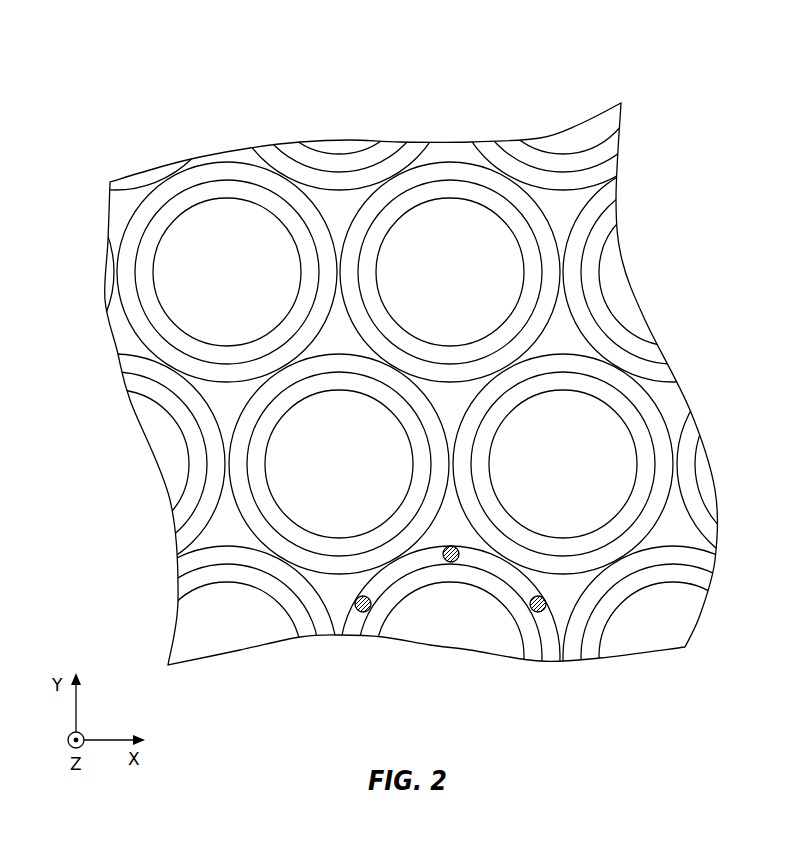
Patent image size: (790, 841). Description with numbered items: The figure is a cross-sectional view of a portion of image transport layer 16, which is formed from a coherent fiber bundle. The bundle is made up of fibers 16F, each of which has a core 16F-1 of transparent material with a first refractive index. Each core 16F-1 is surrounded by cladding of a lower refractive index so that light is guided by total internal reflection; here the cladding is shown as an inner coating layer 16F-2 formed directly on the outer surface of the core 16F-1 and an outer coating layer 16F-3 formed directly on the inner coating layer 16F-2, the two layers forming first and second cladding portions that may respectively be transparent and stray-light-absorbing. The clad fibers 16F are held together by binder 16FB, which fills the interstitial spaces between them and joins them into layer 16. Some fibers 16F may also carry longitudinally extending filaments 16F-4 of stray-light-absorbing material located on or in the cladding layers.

The image transport layer 16 is at (395, 383).
The fibers 16F is at (122, 332).
The core 16F-1 is at (252, 223).
The inner coating layer 16F-2 is at (227, 188).
The outer coating layer 16F-3 is at (172, 190).
The binder 16FB is at (230, 400).
The longitudinally extending filaments 16F-4 is at (530, 608).